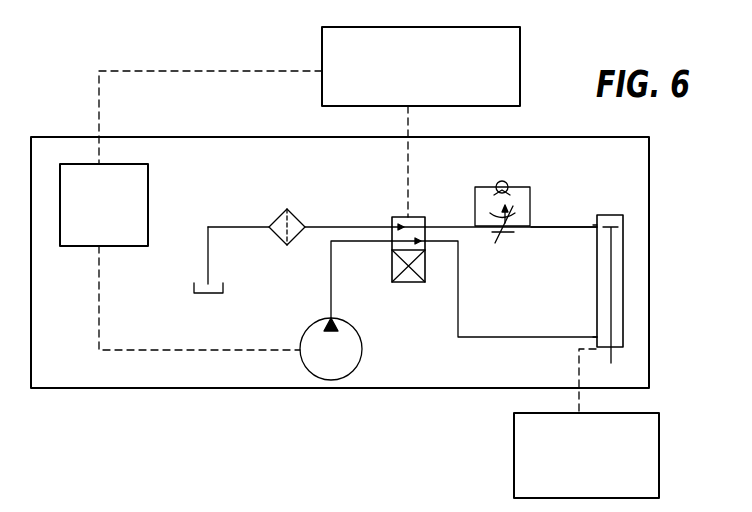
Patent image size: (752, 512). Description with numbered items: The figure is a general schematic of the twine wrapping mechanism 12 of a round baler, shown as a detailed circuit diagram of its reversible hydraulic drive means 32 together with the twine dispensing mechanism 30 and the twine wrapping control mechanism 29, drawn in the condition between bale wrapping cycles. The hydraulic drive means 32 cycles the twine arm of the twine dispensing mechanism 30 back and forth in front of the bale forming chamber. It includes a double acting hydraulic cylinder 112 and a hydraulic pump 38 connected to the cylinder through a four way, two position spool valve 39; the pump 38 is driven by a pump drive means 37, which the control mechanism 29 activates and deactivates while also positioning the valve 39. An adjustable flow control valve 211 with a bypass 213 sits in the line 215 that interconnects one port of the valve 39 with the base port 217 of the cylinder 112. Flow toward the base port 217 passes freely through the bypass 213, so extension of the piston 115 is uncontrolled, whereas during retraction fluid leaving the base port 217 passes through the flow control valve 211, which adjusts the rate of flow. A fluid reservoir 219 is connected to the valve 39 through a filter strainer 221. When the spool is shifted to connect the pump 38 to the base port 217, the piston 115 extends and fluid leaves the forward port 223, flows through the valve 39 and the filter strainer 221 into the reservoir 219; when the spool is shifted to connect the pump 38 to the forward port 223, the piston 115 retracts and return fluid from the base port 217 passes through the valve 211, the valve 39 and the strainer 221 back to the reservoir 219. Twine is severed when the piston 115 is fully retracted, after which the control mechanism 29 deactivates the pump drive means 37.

The twine wrapping mechanism 12 is at (272, 389).
The twine wrapping control mechanism 29 is at (520, 33).
The twine dispensing mechanism 30 is at (659, 440).
The hydraulic drive means 32 is at (649, 190).
The pump drive means 37 is at (148, 170).
The hydraulic pump 38 is at (357, 323).
The hydraulic control valve 39 is at (393, 217).
The hydraulic cylinder 112 is at (618, 255).
The piston 115 is at (611, 279).
The adjustable flow control valve 211 is at (528, 187).
The bypass 213 is at (500, 181).
The line 215 is at (548, 226).
The base port 217 is at (596, 228).
The fluid reservoir 219 is at (226, 289).
The filter strainer 221 is at (278, 218).
The forward port 223 is at (596, 336).